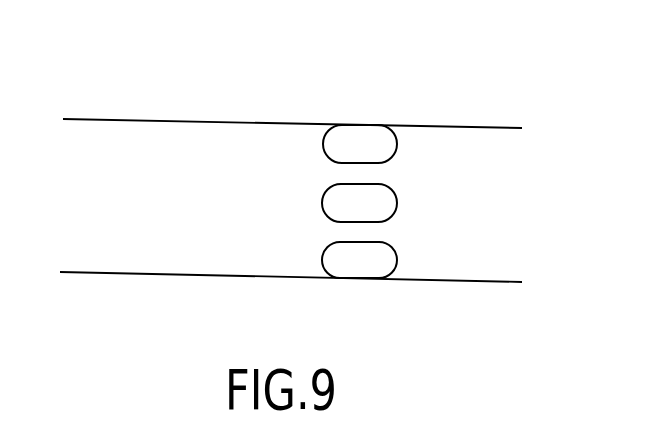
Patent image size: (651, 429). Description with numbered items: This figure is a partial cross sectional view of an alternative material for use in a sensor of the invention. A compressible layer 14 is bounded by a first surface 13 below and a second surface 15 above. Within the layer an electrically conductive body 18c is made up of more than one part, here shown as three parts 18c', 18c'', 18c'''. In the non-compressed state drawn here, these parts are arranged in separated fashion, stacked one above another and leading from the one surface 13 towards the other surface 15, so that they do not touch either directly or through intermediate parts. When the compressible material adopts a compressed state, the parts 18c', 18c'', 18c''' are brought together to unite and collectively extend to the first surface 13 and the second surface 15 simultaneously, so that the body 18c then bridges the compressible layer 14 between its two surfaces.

The first surface 13 is at (89, 274).
The compressible layer 14 is at (176, 145).
The second surface 15 is at (92, 119).
The electrically conductive body 18c is at (320, 201).
The part of electrically conductive body 18c' is at (410, 262).
The part of electrically conductive body 18c'' is at (412, 203).
The part of electrically conductive body 18c''' is at (414, 144).